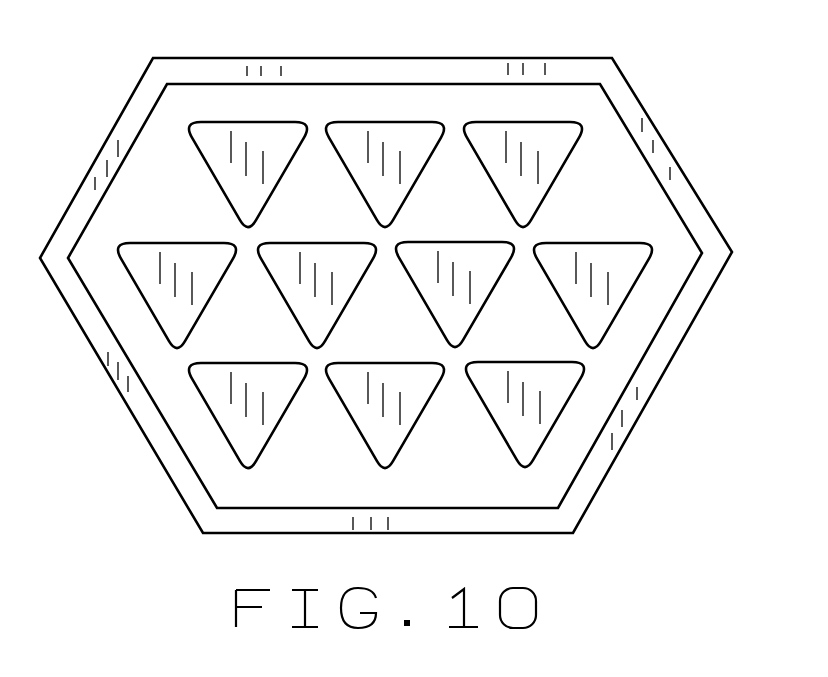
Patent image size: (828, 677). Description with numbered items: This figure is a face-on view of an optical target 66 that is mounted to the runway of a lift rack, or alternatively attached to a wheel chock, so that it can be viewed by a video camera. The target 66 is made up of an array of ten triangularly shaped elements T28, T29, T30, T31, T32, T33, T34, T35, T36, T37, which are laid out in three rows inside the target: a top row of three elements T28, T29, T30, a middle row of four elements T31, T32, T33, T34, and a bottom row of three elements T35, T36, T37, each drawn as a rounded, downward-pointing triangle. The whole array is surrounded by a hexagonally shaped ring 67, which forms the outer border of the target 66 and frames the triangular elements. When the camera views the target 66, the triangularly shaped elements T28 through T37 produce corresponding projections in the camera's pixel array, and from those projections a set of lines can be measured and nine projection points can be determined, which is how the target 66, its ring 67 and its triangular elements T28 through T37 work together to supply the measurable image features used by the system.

The target 66 is at (310, 100).
The hexagonally shaped ring 67 is at (477, 57).
The triangularly shaped element T28 is at (268, 122).
The triangularly shaped element T29 is at (405, 122).
The triangularly shaped element T30 is at (543, 122).
The triangularly shaped element T31 is at (200, 243).
The triangularly shaped element T32 is at (340, 243).
The triangularly shaped element T33 is at (478, 242).
The triangularly shaped element T34 is at (617, 243).
The triangularly shaped element T35 is at (275, 363).
The triangularly shaped element T36 is at (412, 363).
The triangularly shaped element T37 is at (550, 362).